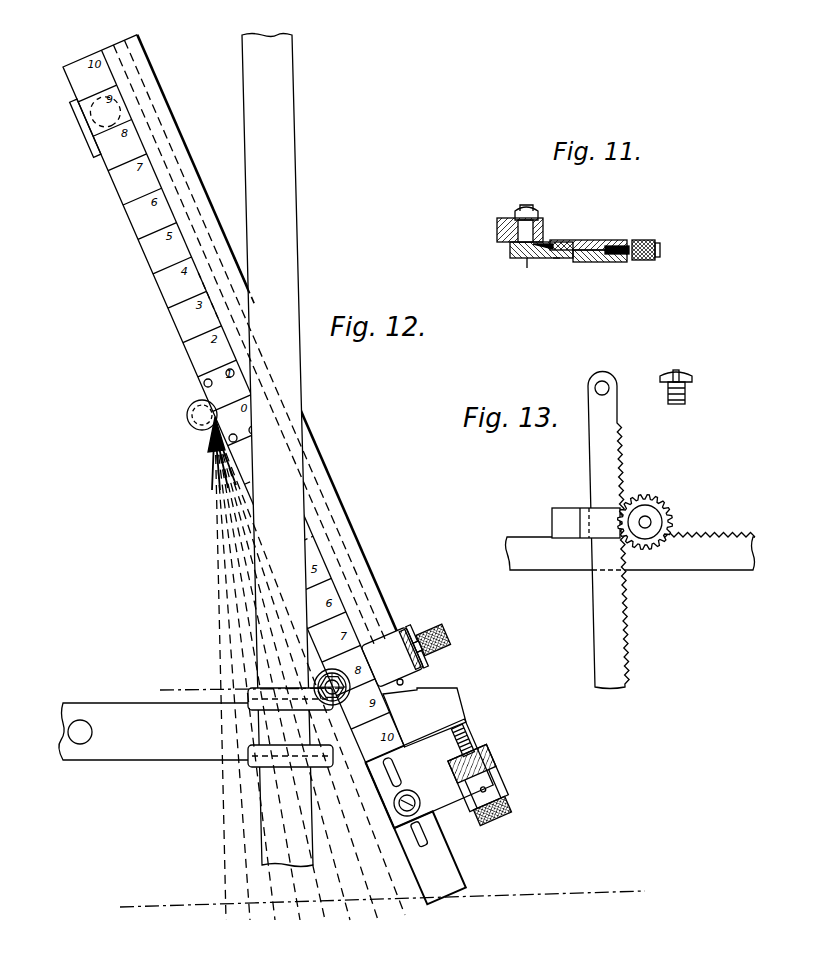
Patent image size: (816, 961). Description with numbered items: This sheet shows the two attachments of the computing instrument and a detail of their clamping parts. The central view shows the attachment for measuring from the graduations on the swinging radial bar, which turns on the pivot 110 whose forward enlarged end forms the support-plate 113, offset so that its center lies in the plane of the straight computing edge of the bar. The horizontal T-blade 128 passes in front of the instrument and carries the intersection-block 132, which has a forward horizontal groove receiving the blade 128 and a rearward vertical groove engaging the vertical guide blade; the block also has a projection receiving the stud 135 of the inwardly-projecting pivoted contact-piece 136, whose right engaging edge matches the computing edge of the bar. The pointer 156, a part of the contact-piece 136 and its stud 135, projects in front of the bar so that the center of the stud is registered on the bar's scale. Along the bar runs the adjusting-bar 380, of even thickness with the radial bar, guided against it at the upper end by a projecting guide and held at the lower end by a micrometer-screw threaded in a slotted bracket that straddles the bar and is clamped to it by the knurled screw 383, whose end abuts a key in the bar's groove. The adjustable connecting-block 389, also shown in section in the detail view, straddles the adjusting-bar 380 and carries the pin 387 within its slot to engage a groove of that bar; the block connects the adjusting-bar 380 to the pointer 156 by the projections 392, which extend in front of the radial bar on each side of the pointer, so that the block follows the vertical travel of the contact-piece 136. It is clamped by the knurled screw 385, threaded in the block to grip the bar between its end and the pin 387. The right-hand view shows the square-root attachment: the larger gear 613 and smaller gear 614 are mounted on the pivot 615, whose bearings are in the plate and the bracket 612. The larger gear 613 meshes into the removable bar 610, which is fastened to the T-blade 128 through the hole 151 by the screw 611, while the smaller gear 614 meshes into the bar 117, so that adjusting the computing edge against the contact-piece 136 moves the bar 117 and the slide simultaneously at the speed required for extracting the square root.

In FIG. 12, the pivot 110 is at (187, 410).
In FIG. 12, the support-plate 113 is at (203, 434).
In FIG. 13, the bar 117 is at (631, 552).
In FIG. 12, the T-blade 128 is at (196, 727).
In FIG. 12, the intersection-block 132 is at (248, 765).
In FIG. 11, the intersection-block 132 is at (498, 218).
In FIG. 12, the stud 135 is at (313, 670).
In FIG. 11, the stud 135 is at (527, 268).
In FIG. 12, the contact-piece 136 is at (312, 687).
In FIG. 11, the contact-piece 136 is at (511, 250).
In FIG. 12, the hole 151 is at (80, 720).
In FIG. 11, the pointer 156 is at (553, 258).
In FIG. 12, the adjusting-bar 380 is at (462, 700).
In FIG. 12, the knurled screw 383 is at (397, 814).
In FIG. 11, the knurled screw 385 is at (660, 250).
In FIG. 11, the pin 387 is at (595, 262).
In FIG. 11, the connecting-block 389 is at (600, 240).
In FIG. 12, the projections 392 is at (418, 678).
In FIG. 11, the projections 392 is at (560, 240).
In FIG. 13, the removable bar 610 is at (617, 633).
In FIG. 13, the screw 611 is at (690, 372).
In FIG. 13, the bracket 612 is at (579, 508).
In FIG. 13, the larger gear 613 is at (667, 515).
In FIG. 13, the smaller gear 614 is at (652, 523).
In FIG. 13, the pivot 615 is at (659, 510).